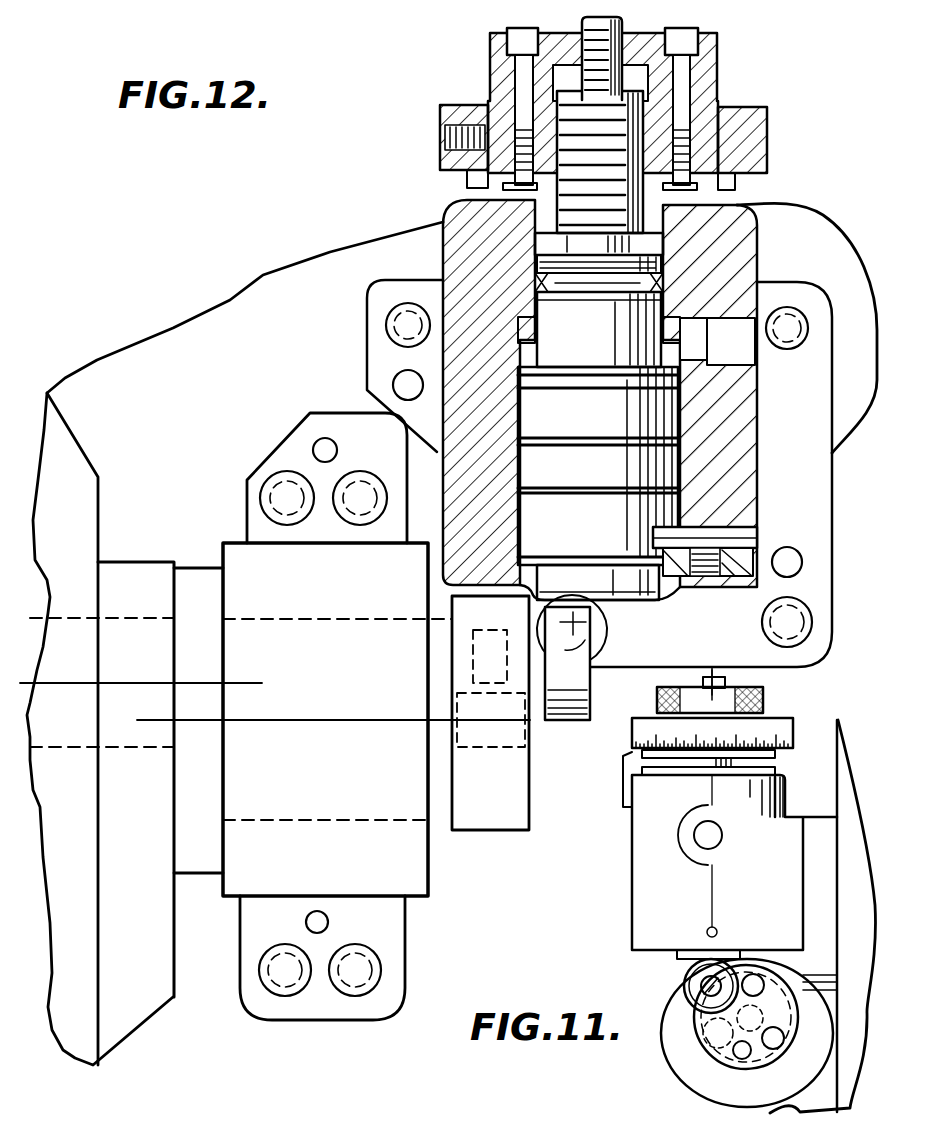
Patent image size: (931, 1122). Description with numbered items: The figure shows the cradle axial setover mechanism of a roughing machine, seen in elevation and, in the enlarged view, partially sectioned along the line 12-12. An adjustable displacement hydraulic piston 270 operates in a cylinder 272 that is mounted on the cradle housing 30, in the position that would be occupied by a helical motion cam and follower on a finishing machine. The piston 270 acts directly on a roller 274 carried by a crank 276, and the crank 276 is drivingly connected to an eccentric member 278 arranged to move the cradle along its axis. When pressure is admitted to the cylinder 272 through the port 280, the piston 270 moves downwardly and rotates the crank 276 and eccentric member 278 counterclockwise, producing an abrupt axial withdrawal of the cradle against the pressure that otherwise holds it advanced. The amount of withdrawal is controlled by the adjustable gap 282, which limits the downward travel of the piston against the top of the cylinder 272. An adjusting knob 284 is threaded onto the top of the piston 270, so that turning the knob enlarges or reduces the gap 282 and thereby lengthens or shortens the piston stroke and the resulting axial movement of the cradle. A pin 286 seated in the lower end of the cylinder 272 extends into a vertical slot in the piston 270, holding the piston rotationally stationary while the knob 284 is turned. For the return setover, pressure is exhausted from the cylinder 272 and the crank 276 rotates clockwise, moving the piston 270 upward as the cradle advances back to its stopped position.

In FIG. 12, the section line 12 is at (688, 675).
In FIG. 11, the section line 12 is at (700, 950).
In FIG. 12, the cradle housing 30 is at (176, 334).
In FIG. 11, the cradle housing 30 is at (837, 782).
In FIG. 12, the adjustable displacement hydraulic piston 270 is at (599, 416).
In FIG. 12, the cylinder 272 is at (725, 420).
In FIG. 12, the roller 274 is at (555, 724).
In FIG. 11, the roller 274 is at (684, 984).
In FIG. 12, the crank 276 is at (282, 820).
In FIG. 11, the crank 276 is at (700, 1040).
In FIG. 12, the eccentric member 278 is at (120, 583).
In FIG. 11, the eccentric member 278 is at (716, 1080).
In FIG. 12, the port 280 is at (717, 341).
In FIG. 12, the adjustable gap 282 is at (462, 196).
In FIG. 12, the adjusting knob 284 is at (753, 120).
In FIG. 11, the adjusting knob 284 is at (782, 710).
In FIG. 12, the pin 286 is at (757, 540).